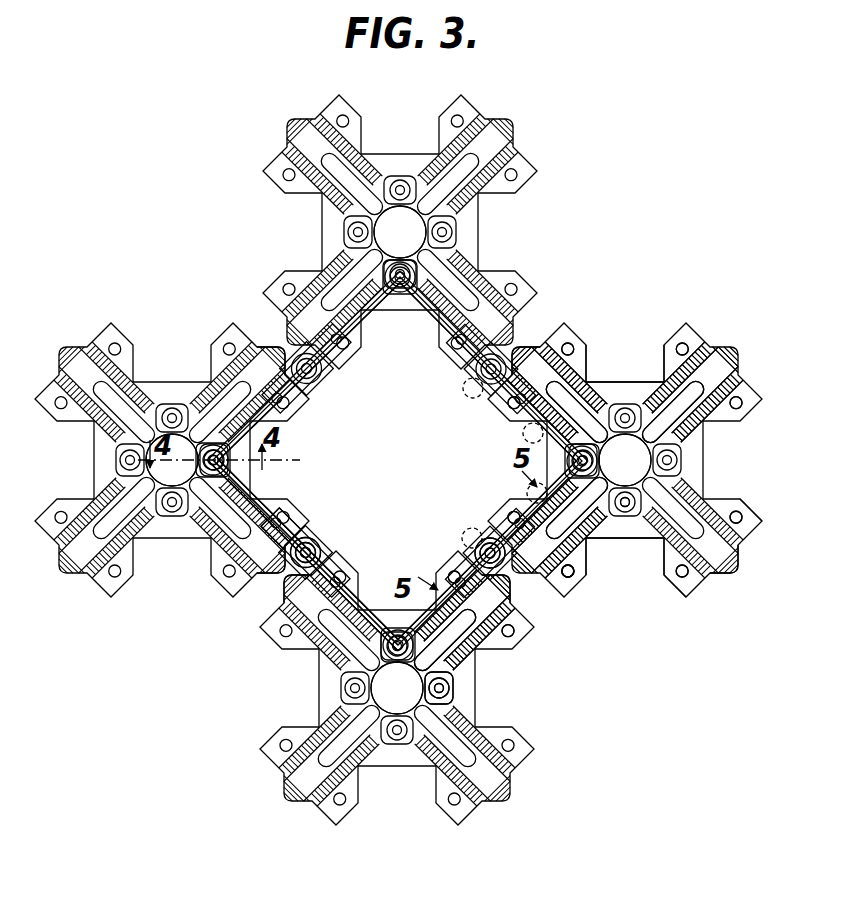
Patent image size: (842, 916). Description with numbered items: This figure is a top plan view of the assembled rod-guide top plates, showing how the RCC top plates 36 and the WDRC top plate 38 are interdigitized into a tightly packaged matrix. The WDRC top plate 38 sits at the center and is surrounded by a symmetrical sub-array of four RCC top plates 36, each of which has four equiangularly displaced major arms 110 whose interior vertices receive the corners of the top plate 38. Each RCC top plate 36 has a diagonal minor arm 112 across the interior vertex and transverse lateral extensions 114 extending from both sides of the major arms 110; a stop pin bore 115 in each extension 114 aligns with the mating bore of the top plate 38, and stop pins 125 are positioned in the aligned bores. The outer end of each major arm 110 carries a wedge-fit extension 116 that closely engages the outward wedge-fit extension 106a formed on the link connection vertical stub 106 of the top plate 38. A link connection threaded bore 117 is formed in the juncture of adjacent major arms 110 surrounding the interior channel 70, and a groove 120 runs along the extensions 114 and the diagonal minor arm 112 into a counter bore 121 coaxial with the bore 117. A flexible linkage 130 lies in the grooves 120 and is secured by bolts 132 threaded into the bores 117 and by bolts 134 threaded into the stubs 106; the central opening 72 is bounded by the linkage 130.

The RCC top plate 36 is at (543, 168).
The interior channel 70 is at (390, 245).
The central opening 72 is at (395, 426).
The WDRC top plate 38 is at (312, 502).
The link connection vertical stub 106 is at (320, 508).
The wedge-fit extension 106a is at (298, 578).
The major arm 110 is at (528, 350).
The diagonal minor arm 112 is at (612, 382).
The transverse lateral extension 114 is at (740, 514).
The stop pin bore 115 is at (578, 598).
The wedge-fit extension 116 is at (258, 580).
The link connection threaded bore 117 is at (625, 507).
The groove 120 is at (577, 348).
The counter bore 121 is at (470, 668).
The stop pin 125 is at (506, 505).
The flexible linkage 130 is at (352, 588).
The bolt 132 is at (228, 462).
The bolt 134 is at (312, 550).